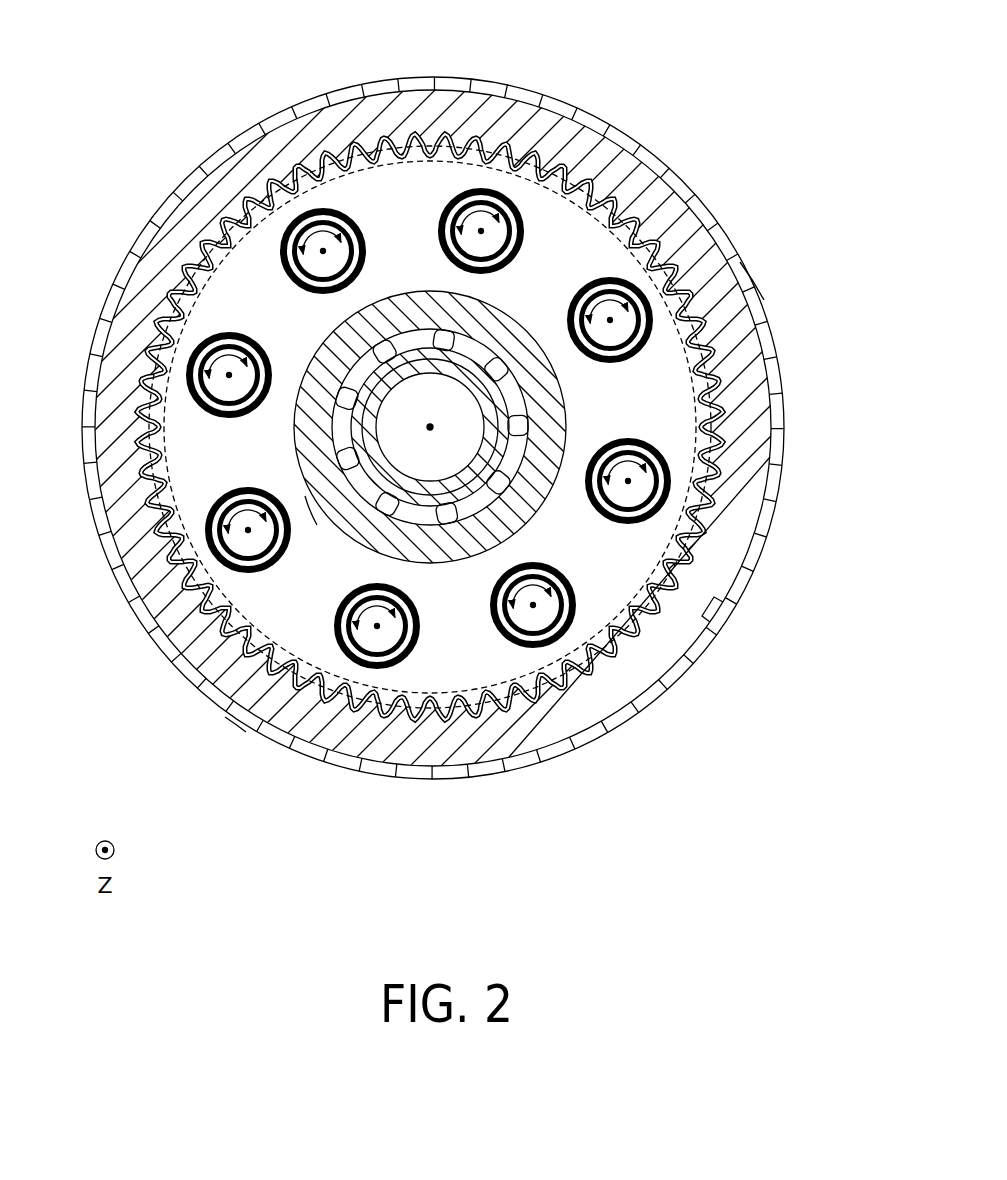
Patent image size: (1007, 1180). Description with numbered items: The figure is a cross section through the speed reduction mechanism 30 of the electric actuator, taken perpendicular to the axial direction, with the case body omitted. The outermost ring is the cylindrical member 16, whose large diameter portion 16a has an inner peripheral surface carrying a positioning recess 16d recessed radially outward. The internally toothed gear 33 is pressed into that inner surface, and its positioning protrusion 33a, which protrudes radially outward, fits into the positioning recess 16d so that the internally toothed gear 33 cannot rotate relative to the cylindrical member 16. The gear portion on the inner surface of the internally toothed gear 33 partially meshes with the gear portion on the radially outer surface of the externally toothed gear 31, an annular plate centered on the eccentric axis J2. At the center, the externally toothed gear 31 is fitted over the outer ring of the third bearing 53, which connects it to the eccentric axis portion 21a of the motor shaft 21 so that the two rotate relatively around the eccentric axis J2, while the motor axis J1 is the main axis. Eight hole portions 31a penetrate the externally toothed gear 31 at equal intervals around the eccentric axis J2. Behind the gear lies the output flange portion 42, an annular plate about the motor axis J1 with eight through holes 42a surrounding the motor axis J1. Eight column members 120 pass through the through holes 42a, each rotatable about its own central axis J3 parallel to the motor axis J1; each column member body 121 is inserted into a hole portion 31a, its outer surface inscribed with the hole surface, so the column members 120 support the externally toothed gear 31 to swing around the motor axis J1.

The cylindrical member 16 is at (773, 330).
The large diameter portion 16a is at (735, 266).
The positioning recess 16d is at (738, 609).
The motor shaft 21 is at (465, 372).
The eccentric axis portion 21a is at (330, 536).
The speed reduction mechanism 30 is at (643, 86).
The externally toothed gear 31 is at (430, 427).
The hole portion 31a is at (573, 200).
The internally toothed gear 33 is at (772, 459).
The positioning protrusion 33a is at (712, 620).
The output flange portion 42 is at (160, 416).
The through hole 42a is at (470, 128).
The third bearing 53 is at (233, 712).
The column member 120 is at (345, 203).
The column member body 121 is at (336, 212).
The motor axis J1 is at (430, 427).
The eccentric axis J2 is at (327, 545).
The central axis J3 is at (323, 251).